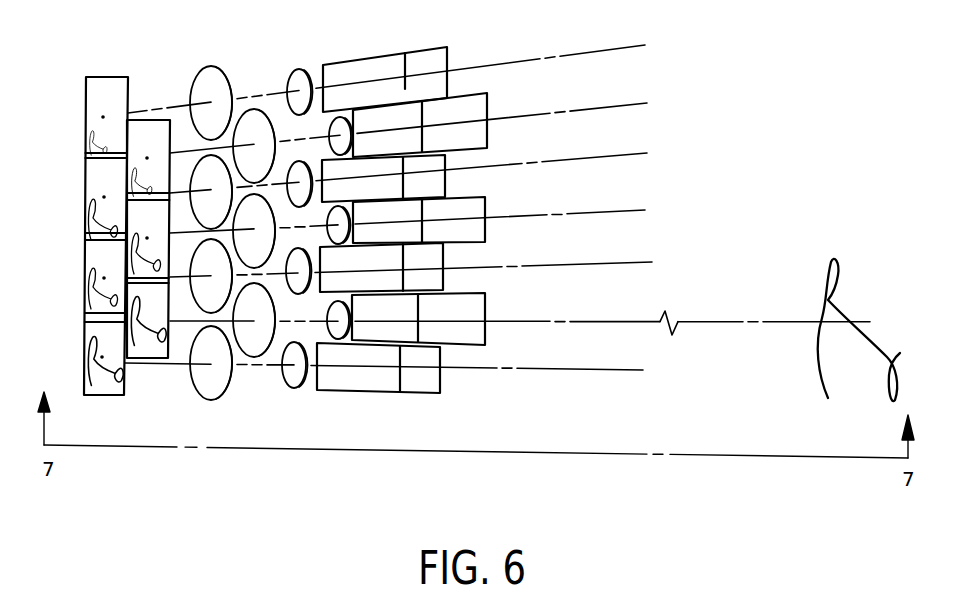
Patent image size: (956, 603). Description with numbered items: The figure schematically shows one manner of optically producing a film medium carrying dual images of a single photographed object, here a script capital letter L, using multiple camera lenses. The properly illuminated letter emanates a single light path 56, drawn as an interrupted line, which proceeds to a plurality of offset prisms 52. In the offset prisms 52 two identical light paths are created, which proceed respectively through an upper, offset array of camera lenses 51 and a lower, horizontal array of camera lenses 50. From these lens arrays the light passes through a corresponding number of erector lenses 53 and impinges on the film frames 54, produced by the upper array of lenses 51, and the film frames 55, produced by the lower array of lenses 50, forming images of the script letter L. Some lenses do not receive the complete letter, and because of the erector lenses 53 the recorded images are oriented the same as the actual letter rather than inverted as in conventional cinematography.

The lower horizontal array of camera lenses 50 is at (298, 79).
The upper offset array of camera lenses 51 is at (340, 126).
The offset prisms 52 is at (445, 47).
The erector lenses 53 is at (195, 372).
The film frames 54 is at (153, 130).
The film frames 55 is at (88, 384).
The single light path 56 is at (695, 322).